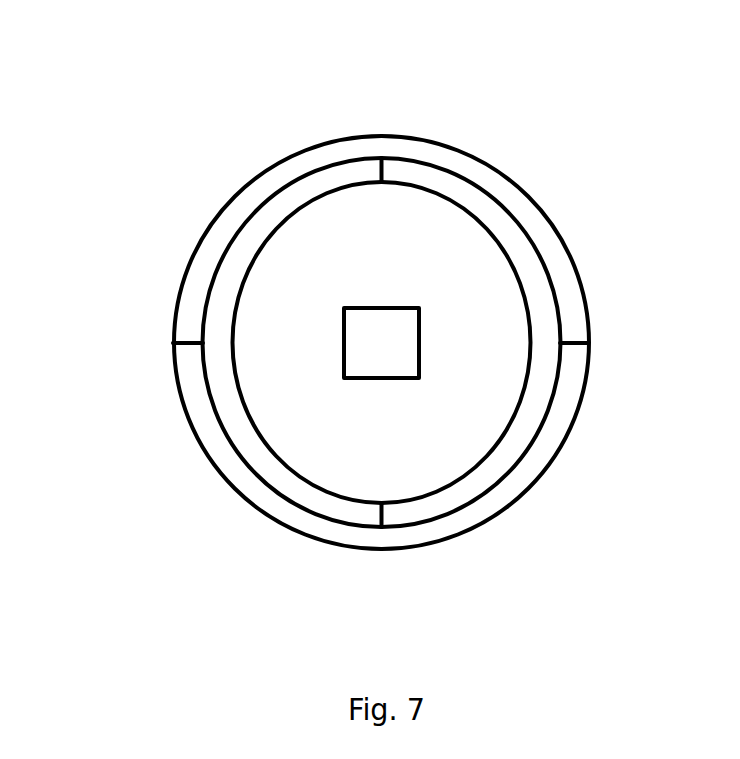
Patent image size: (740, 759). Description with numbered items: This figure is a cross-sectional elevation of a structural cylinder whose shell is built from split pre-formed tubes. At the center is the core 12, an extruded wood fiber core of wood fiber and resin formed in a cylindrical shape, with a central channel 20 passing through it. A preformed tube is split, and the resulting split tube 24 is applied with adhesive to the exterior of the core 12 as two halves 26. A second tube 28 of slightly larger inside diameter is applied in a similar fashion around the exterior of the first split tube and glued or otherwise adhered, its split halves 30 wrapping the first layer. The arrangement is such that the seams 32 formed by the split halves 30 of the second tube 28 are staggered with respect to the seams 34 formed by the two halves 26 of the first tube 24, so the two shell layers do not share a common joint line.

The core 12 is at (402, 263).
The central channel 20 is at (403, 355).
The split tube 24 is at (228, 273).
The two halves 26 is at (227, 410).
The second tube 28 is at (258, 193).
The split halves 30 is at (236, 496).
The seams 32 is at (592, 343).
The seams 34 is at (390, 142).